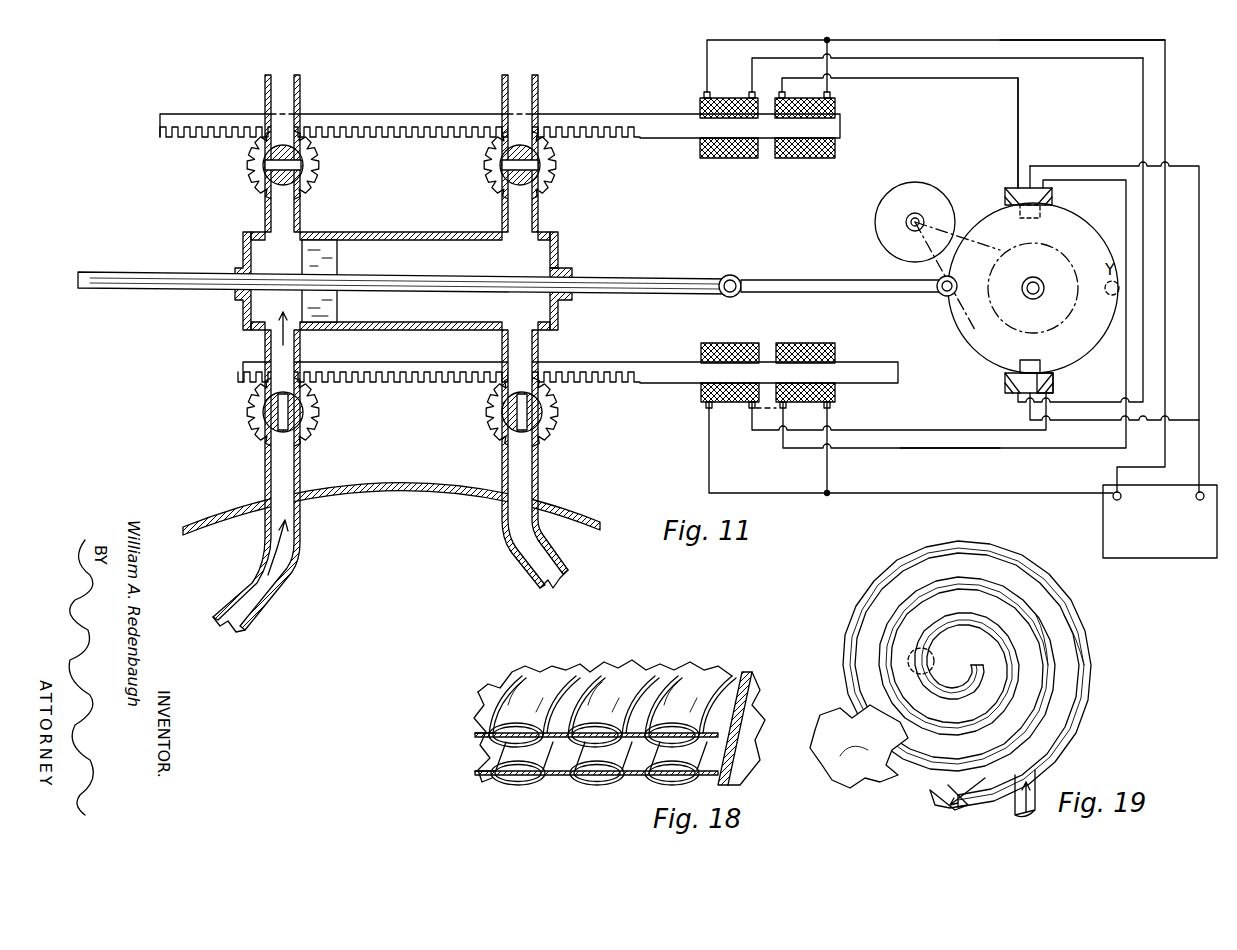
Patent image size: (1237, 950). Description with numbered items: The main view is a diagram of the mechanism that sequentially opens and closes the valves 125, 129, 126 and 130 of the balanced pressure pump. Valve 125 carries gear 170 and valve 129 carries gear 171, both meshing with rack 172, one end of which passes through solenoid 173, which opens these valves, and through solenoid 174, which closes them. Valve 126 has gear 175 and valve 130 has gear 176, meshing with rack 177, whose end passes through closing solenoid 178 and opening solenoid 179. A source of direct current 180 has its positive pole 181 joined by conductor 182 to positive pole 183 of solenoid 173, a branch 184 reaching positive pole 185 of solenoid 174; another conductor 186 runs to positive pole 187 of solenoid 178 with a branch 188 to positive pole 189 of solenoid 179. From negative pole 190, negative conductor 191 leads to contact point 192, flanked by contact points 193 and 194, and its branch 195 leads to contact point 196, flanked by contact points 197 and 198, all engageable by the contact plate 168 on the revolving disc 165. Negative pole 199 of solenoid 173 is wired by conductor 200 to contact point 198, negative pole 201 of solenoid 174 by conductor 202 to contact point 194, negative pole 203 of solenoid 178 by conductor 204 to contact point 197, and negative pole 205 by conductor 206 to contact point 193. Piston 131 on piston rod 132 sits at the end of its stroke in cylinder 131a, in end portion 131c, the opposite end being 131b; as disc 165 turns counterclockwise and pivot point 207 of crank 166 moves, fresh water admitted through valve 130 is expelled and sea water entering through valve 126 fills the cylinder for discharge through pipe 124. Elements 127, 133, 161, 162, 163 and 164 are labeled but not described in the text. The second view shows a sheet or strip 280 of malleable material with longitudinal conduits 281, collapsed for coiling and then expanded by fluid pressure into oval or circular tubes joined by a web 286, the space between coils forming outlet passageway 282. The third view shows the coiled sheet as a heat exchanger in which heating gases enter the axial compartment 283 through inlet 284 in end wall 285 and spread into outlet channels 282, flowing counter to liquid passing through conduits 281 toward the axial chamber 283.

In FIG. 11, the pipe 124 is at (520, 80).
In FIG. 11, the valve 125 is at (542, 412).
In FIG. 11, the valve 126 is at (540, 178).
In FIG. 11, the upper left pipe 127 is at (265, 95).
In FIG. 11, the valve 129 is at (303, 410).
In FIG. 11, the valve 130 is at (303, 172).
In FIG. 11, the piston 131 is at (337, 257).
In FIG. 11, the cylinder 131a is at (578, 312).
In FIG. 11, the opposite end of cylinder 131b is at (558, 245).
In FIG. 11, the end portion of cylinder 131c is at (243, 248).
In FIG. 11, the piston rod 132 is at (630, 277).
In FIG. 11, the crank disk 133 is at (910, 195).
In FIG. 11, the pivot hub 161 is at (922, 217).
In FIG. 11, the pivot pin 162 is at (918, 220).
In FIG. 11, the radial line 163 is at (990, 222).
In FIG. 11, the crank shaft 164 is at (1040, 280).
In FIG. 11, the disc 165 is at (952, 318).
In FIG. 11, the crank 166 is at (978, 310).
In FIG. 11, the contact plate 168 is at (1000, 357).
In FIG. 11, the gear 170 is at (548, 435).
In FIG. 11, the gear 171 is at (306, 428).
In FIG. 11, the rack 172 is at (628, 368).
In FIG. 11, the solenoid 173 is at (701, 352).
In FIG. 11, the solenoid 174 is at (835, 352).
In FIG. 11, the gear 175 is at (498, 190).
In FIG. 11, the gear 176 is at (305, 192).
In FIG. 11, the rack 177 is at (390, 130).
In FIG. 11, the solenoid 178 is at (700, 152).
In FIG. 11, the solenoid 179 is at (835, 152).
In FIG. 11, the source of D.C. electric current 180 is at (1110, 542).
In FIG. 11, the positive pole 181 is at (1113, 500).
In FIG. 11, the conductor 182 is at (958, 493).
In FIG. 11, the positive pole 183 is at (694, 413).
In FIG. 11, the branch 184 is at (827, 470).
In FIG. 11, the positive pole 185 is at (836, 406).
In FIG. 11, the conductor 186 is at (707, 55).
In FIG. 11, the positive pole 187 is at (683, 100).
In FIG. 11, the branch 188 is at (837, 64).
In FIG. 11, the positive pole 189 is at (840, 90).
In FIG. 11, the negative pole 190 is at (1199, 500).
In FIG. 11, the negative conductor 191 is at (1075, 166).
In FIG. 11, the contact point 192 is at (1030, 166).
In FIG. 11, the contact point 193 is at (1018, 180).
In FIG. 11, the contact point 194 is at (1052, 198).
In FIG. 11, the branch 195 is at (1062, 425).
In FIG. 11, the contact point 196 is at (1010, 380).
In FIG. 11, the contact point 197 is at (1005, 380).
In FIG. 11, the contact point 198 is at (1053, 382).
In FIG. 11, the negative pole 199 is at (746, 407).
In FIG. 11, the conductor 200 is at (900, 432).
In FIG. 11, the negative pole 201 is at (785, 407).
In FIG. 11, the conductor 202 is at (940, 450).
In FIG. 11, the negative pole 203 is at (745, 92).
In FIG. 11, the conductor 204 is at (1020, 58).
In FIG. 11, the negative pole 205 is at (776, 94).
In FIG. 11, the conductor 206 is at (945, 78).
In FIG. 11, the pivot point 207 is at (940, 292).
In FIG. 18, the sheet or strip 280 is at (472, 763).
In FIG. 18, the conduits 281 is at (640, 775).
In FIG. 18, the outlet channel or passageway 282 is at (738, 760).
In FIG. 19, the outlet channel or passageway 282 is at (1056, 704).
In FIG. 19, the axial compartment 283 is at (930, 608).
In FIG. 19, the inlet 284 is at (921, 648).
In FIG. 19, the end wall 285 is at (870, 770).
In FIG. 18, the web 286 is at (640, 712).
In FIG. 19, the web 286 is at (1048, 662).